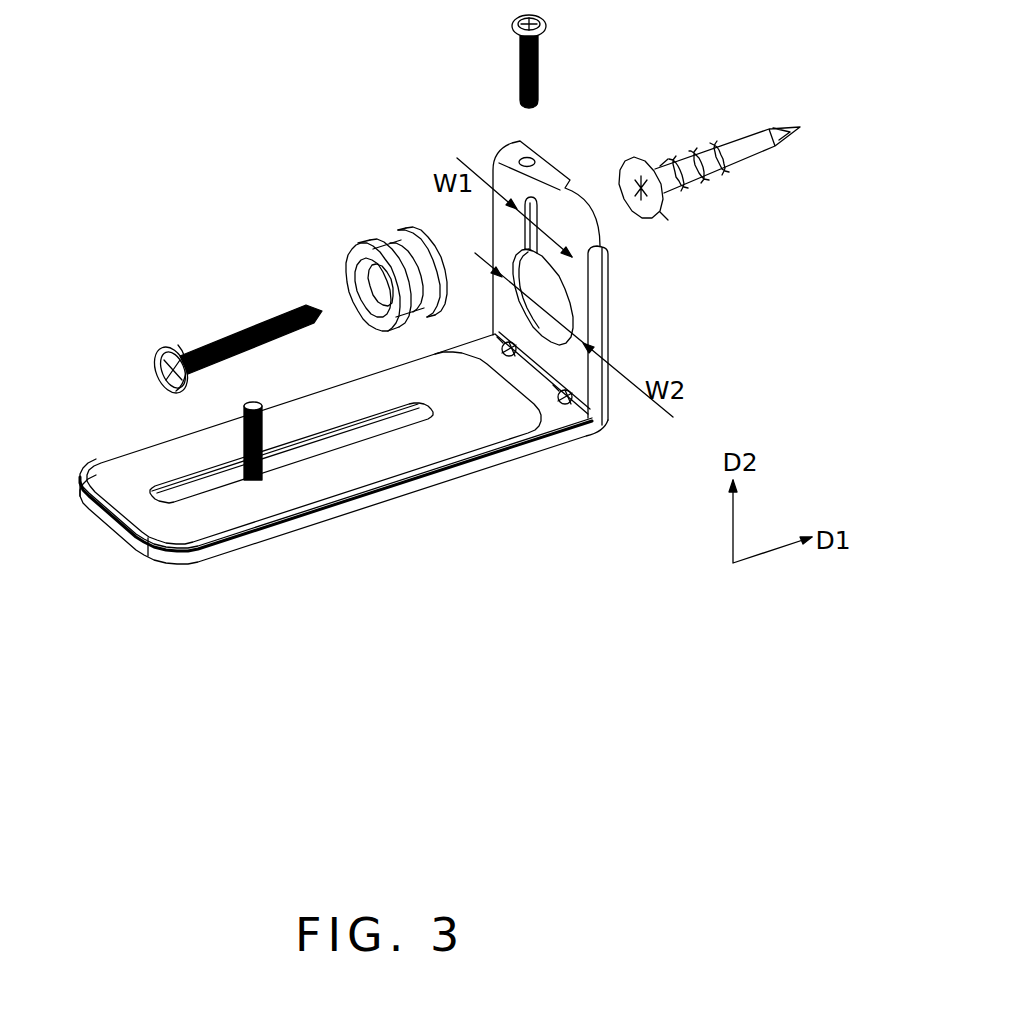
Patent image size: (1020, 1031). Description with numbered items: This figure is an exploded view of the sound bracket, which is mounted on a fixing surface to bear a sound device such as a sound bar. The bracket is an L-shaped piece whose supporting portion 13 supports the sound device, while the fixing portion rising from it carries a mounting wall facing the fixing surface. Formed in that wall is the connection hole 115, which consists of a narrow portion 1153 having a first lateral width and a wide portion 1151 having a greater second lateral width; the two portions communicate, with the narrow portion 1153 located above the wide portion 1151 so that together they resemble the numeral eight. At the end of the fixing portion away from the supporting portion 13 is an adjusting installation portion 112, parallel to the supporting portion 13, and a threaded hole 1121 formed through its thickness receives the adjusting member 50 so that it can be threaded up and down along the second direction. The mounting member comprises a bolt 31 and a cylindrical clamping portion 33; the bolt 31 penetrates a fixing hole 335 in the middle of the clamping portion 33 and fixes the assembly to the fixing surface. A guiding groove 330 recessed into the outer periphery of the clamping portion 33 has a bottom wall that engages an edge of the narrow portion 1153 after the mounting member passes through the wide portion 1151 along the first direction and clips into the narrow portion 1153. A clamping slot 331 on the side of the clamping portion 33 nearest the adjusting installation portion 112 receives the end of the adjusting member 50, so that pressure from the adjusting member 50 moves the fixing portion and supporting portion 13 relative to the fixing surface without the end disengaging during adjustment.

The supporting portion 13 is at (212, 517).
The adjusting installation portion 112 is at (580, 271).
The through hole 1121 is at (524, 163).
The connection hole 115 is at (629, 271).
The narrow portion 1153 is at (548, 256).
The wide portion 1151 is at (557, 322).
The clamping portion 33 is at (370, 245).
The clamping slot 331 is at (382, 245).
The guiding groove 330 is at (418, 262).
The fixing hole 335 is at (357, 289).
The adjusting member 50 is at (539, 63).
The bolt 31 is at (186, 348).